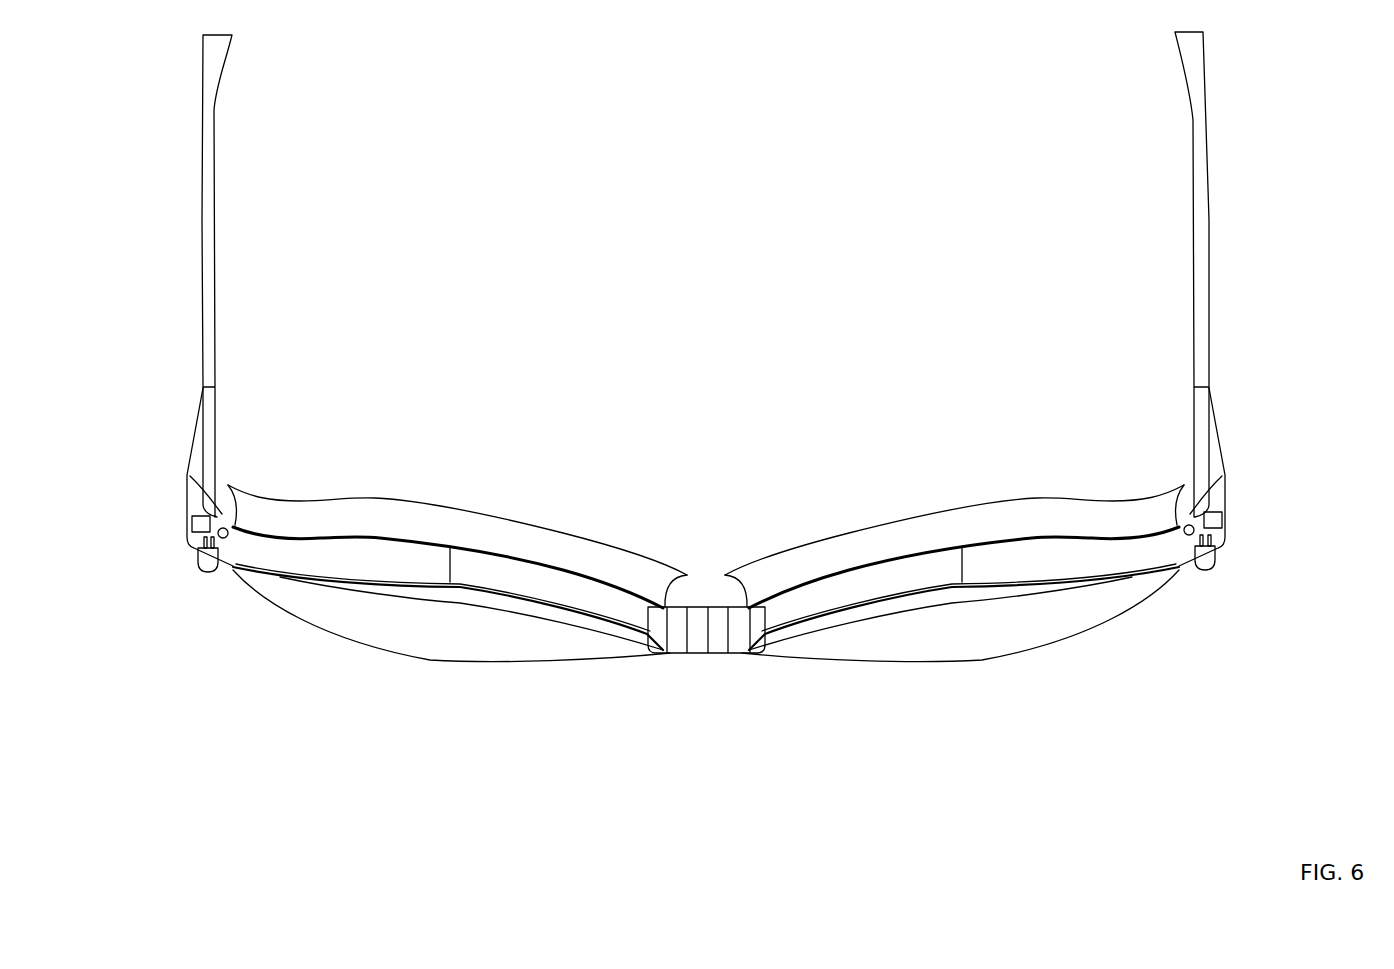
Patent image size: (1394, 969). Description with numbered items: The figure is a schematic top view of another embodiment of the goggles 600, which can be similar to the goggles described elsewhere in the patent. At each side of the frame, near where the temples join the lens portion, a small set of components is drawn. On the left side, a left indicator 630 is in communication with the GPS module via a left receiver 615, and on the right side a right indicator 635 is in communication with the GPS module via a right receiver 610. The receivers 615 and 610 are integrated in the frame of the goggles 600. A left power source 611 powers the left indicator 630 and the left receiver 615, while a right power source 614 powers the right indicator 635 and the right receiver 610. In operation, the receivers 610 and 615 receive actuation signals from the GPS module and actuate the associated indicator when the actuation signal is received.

The goggles 600 is at (1285, 158).
The right receiver 610 is at (1215, 510).
The left receiver 615 is at (198, 515).
The left power source 611 is at (228, 568).
The right power source 614 is at (1187, 535).
The left indicator 630 is at (212, 572).
The right indicator 635 is at (1205, 568).